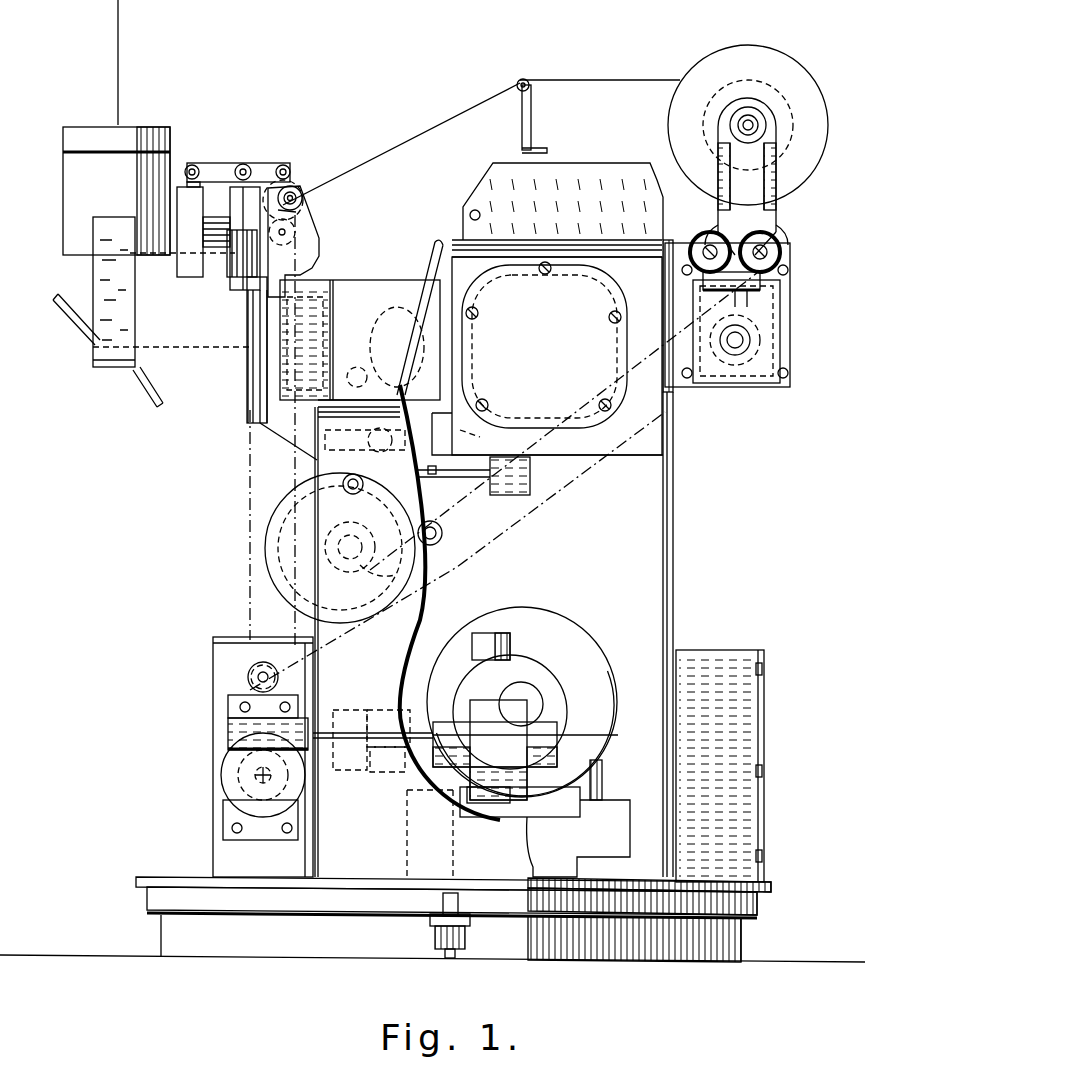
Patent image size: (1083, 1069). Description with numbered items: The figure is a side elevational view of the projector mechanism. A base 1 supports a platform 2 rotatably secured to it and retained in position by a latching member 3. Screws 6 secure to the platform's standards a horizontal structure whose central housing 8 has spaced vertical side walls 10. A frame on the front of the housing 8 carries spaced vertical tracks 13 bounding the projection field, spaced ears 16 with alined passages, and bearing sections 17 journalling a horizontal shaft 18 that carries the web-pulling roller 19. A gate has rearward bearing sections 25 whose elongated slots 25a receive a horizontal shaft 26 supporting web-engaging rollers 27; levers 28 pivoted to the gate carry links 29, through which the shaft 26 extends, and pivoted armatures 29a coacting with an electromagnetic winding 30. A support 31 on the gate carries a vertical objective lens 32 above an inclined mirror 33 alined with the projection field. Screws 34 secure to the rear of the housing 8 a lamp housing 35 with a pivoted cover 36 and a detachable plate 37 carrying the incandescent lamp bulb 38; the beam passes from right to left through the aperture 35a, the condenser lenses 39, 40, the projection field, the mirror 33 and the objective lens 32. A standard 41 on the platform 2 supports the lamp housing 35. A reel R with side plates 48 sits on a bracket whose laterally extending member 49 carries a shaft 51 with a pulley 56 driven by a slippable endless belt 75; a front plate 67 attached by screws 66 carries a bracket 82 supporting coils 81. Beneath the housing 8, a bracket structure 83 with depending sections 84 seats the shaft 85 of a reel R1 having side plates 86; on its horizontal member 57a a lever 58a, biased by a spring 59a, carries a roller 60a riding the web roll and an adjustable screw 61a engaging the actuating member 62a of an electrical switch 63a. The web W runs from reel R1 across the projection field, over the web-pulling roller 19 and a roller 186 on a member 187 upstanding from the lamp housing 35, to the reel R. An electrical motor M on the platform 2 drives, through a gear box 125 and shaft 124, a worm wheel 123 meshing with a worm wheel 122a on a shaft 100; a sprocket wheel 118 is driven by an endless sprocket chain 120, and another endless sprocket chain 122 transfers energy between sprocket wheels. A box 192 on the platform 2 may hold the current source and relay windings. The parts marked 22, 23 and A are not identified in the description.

The base 1 is at (238, 947).
The platform 2 is at (150, 876).
The latching member 3 is at (443, 905).
The screws 6 is at (357, 377).
The central housing 8 is at (342, 277).
The side walls 10 is at (358, 285).
The vertical tracks 13 is at (250, 410).
The ears 16 is at (240, 192).
The bearing sections 17 is at (310, 252).
The horizontal shaft 18 is at (303, 222).
The web-pulling roller 19 is at (300, 235).
The block 22 is at (230, 272).
The post 23 is at (252, 295).
The bearing section 25 is at (300, 195).
The slot 25a is at (292, 192).
The horizontal shaft 26 is at (296, 203).
The web-engaging rollers 27 is at (300, 207).
The levers 28 is at (262, 163).
The link 29 is at (285, 165).
The pivoted armature 29a is at (190, 165).
The electromagnetic winding 30 is at (215, 228).
The support 31 is at (180, 262).
The objective lens 32 is at (70, 175).
The inclined mirror 33 is at (70, 305).
The screws 34 is at (428, 270).
The lamp housing 35 is at (640, 455).
The aperture 35a is at (485, 316).
The pivoted cover 36 is at (588, 163).
The detachable plate 37 is at (612, 300).
The incandescent lamp bulb 38 is at (608, 290).
The condenser lens 39 is at (382, 347).
The condenser lens 40 is at (252, 361).
The standard 41 is at (672, 549).
The side plate 48 is at (765, 53).
The laterally extending member 49 is at (755, 160).
The shaft 51 is at (738, 125).
The pulley 56 is at (775, 120).
The horizontal member 57a is at (370, 470).
The lever 58a is at (440, 522).
The spring 59a is at (385, 435).
The roller 60a is at (438, 538).
The adjustable screw 61a is at (427, 472).
The actuating member 62a is at (445, 482).
The electrical switch 63a is at (490, 480).
The screws 66 is at (790, 270).
The front plate 67 is at (793, 330).
The endless belt 75 is at (720, 185).
The coils 81 is at (706, 232).
The bracket 82 is at (760, 290).
The bracket structure 83 is at (375, 503).
The depending sections 84 is at (330, 508).
The shaft 85 is at (350, 560).
The side plates 86 is at (272, 532).
The shaft 100 is at (255, 778).
The sprocket wheel 118 is at (250, 672).
The endless sprocket chain 120 is at (255, 500).
The endless sprocket chain 122 is at (543, 505).
The worm wheel 122a is at (222, 805).
The worm wheel 123 is at (230, 733).
The shaft 124 is at (420, 737).
The gear box 125 is at (520, 740).
The roller 186 is at (530, 88).
The member 187 is at (520, 135).
The box 192 is at (725, 650).
The belt A is at (418, 622).
The electrical motor M is at (560, 630).
The reel R is at (805, 190).
The reel R1 is at (266, 565).
The web W is at (560, 75).